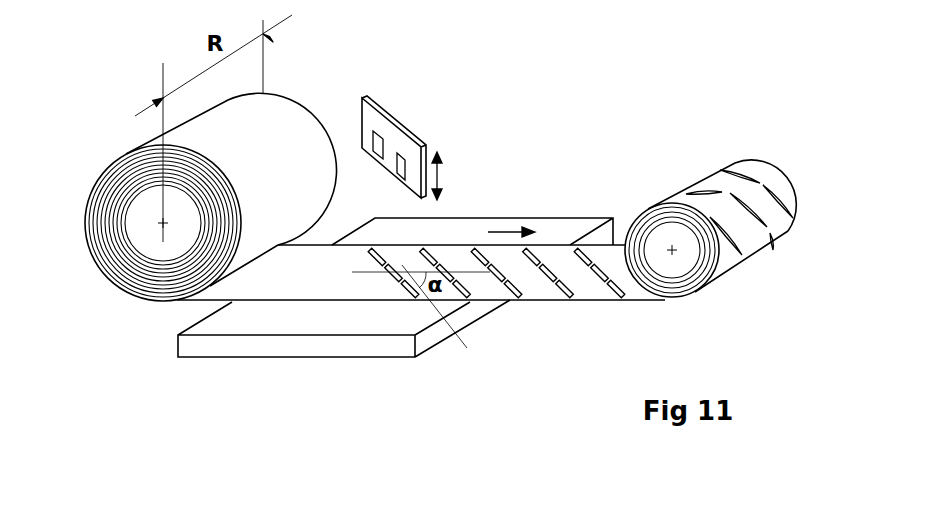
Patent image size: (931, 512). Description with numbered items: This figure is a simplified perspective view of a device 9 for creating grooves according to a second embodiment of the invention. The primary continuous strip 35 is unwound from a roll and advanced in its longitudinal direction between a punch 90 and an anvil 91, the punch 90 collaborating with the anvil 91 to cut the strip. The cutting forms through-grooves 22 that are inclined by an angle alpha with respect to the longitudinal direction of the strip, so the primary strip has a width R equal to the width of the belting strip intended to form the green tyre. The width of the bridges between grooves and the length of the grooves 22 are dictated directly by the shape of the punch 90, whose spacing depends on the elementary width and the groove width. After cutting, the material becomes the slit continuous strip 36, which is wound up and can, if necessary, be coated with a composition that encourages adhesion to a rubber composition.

The apparatus for producing slitted sheet 9 is at (598, 110).
The through-grooves 22 is at (562, 288).
The primary continuous strip 35 is at (137, 176).
The slit continuous strip 36 is at (740, 233).
The punch 90 is at (388, 143).
The anvil 91 is at (290, 322).